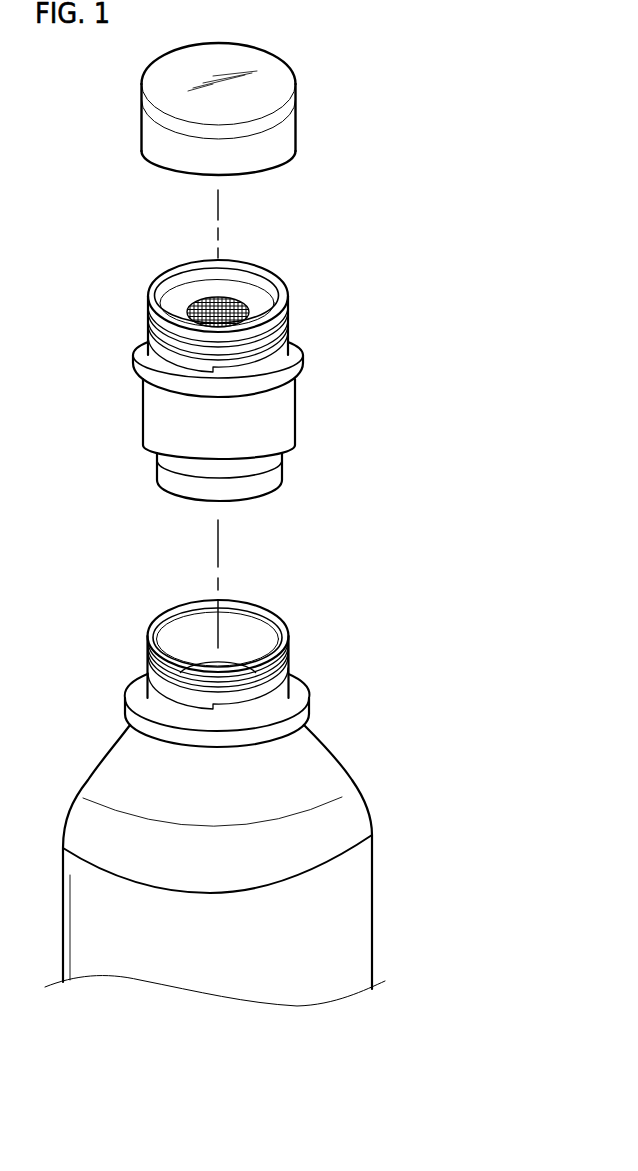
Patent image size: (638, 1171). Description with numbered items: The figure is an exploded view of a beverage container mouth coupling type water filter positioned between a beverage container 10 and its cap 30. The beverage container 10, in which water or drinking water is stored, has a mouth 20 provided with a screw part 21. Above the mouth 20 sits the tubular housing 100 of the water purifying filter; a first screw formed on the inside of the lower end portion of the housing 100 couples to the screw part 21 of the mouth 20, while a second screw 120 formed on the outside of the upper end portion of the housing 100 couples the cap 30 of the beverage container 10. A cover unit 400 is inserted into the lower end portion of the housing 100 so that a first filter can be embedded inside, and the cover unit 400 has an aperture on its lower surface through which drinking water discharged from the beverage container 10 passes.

The beverage container 10 is at (348, 908).
The mouth 20 is at (258, 625).
The screw part 21 is at (288, 682).
The cap 30 is at (283, 127).
The housing 100 is at (288, 397).
The second screw 120 is at (288, 307).
The cover unit 400 is at (267, 480).